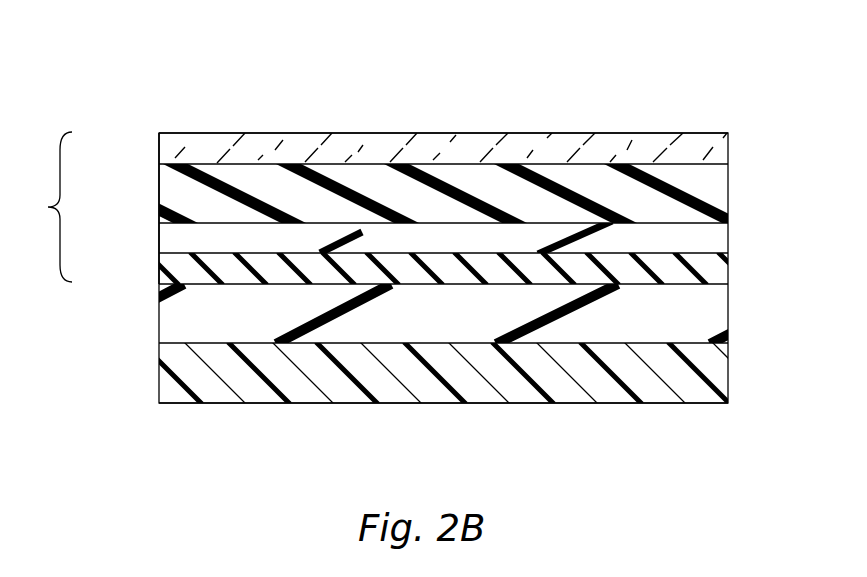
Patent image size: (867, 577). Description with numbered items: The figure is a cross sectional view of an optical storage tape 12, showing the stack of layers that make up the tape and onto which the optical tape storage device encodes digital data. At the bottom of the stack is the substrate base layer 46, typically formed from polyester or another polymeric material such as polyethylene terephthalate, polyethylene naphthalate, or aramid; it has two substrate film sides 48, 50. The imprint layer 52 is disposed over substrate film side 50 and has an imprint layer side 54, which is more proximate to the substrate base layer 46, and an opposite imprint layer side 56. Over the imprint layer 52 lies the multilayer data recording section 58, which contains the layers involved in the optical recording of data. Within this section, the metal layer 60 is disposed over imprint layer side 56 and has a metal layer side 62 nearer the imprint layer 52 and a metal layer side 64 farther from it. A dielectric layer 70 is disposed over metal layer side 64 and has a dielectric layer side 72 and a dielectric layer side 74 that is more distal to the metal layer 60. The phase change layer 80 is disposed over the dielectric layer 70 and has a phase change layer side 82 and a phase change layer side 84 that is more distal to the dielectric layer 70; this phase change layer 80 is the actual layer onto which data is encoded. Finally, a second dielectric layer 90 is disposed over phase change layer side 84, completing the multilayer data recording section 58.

The optical storage tape 12 is at (589, 86).
The substrate base layer 46 is at (185, 380).
The substrate film side 48 is at (558, 403).
The substrate film side 50 is at (668, 350).
The imprint layer 52 is at (167, 305).
The imprint layer side 54 is at (222, 343).
The imprint layer side 56 is at (657, 284).
The multilayer data recording section 58 is at (90, 208).
The metal layer 60 is at (177, 283).
The metal layer side 62 is at (175, 265).
The metal layer side 64 is at (677, 260).
The dielectric layer 70 is at (158, 233).
The dielectric layer side 72 is at (173, 248).
The dielectric layer side 74 is at (727, 226).
The phase change layer 80 is at (158, 175).
The phase change layer side 82 is at (158, 216).
The phase change layer side 84 is at (727, 168).
The dielectric layer 90 is at (158, 134).